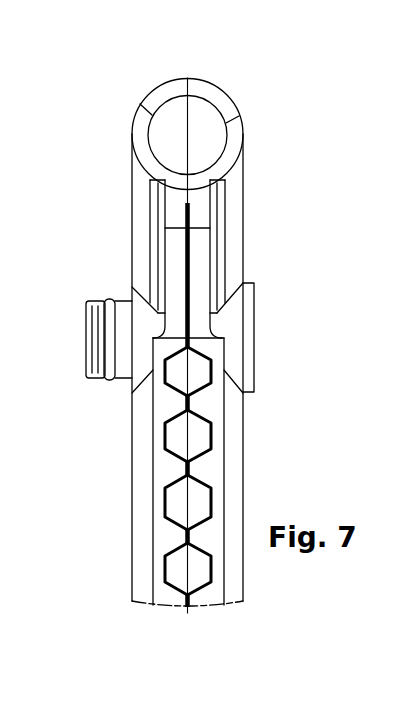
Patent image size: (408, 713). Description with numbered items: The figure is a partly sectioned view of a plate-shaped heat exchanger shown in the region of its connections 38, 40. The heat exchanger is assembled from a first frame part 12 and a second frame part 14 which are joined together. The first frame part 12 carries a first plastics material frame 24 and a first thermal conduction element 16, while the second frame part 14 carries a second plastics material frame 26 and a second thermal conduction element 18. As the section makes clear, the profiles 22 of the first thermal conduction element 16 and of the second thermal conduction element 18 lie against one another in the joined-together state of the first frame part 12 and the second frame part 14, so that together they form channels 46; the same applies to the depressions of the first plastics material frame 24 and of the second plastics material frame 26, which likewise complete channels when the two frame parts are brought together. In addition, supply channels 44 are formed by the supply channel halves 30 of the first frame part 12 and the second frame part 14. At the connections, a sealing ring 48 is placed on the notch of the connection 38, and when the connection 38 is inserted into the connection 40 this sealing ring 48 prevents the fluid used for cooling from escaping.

The first frame part 12 is at (99, 463).
The second frame part 14 is at (259, 459).
The first thermal conduction element 16 is at (175, 262).
The second thermal conduction element 18 is at (202, 270).
The profiles 22 is at (168, 530).
The first plastics material frame 24 is at (142, 187).
The second plastics material frame 26 is at (240, 197).
The supply channel halves 30 is at (155, 97).
The connection 38 is at (88, 301).
The connection 40 is at (260, 295).
The supply channels 44 is at (210, 130).
The channels 46 is at (177, 498).
The sealing ring 48 is at (108, 300).